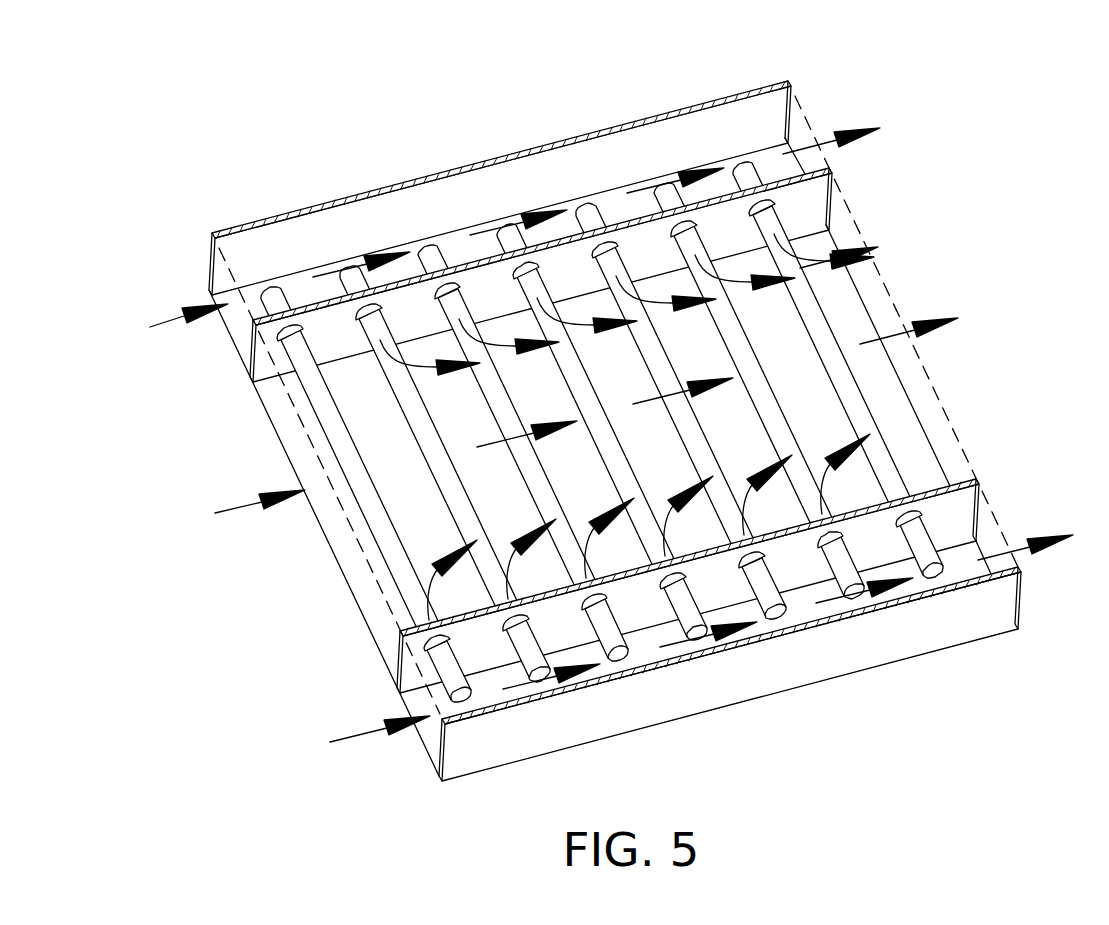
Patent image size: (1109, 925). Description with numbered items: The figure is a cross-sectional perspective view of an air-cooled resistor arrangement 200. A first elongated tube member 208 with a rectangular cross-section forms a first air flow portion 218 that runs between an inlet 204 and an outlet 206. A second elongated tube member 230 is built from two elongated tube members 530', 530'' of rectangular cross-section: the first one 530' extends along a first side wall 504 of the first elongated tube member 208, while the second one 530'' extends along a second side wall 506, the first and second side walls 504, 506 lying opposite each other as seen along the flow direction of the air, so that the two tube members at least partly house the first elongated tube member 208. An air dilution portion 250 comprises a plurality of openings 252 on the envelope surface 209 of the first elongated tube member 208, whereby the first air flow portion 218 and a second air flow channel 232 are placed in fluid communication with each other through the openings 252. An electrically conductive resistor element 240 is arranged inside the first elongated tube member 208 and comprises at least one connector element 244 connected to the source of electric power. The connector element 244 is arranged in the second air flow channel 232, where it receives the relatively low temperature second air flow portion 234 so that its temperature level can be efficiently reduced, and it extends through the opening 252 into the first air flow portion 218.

The resistor arrangement 200 is at (430, 73).
The inlet 204 is at (243, 550).
The outlet 206 is at (943, 288).
The first elongated tube member 208 is at (803, 202).
The envelope surface 209 is at (950, 513).
The first air flow portion 218 is at (375, 410).
The second elongated tube member 230 is at (973, 610).
The second air flow channel 232 is at (645, 643).
The second air flow portion 234 is at (900, 603).
The electrically conductive resistor element 240 is at (543, 485).
The connector element 244 is at (643, 652).
The air dilution portion 250 is at (540, 257).
The opening 252 is at (685, 585).
The first side wall 504 is at (330, 333).
The second side wall 506 is at (773, 523).
The first one of the two elongated tube members 530' is at (117, 202).
The second one of the two elongated tube members 530'' is at (357, 806).